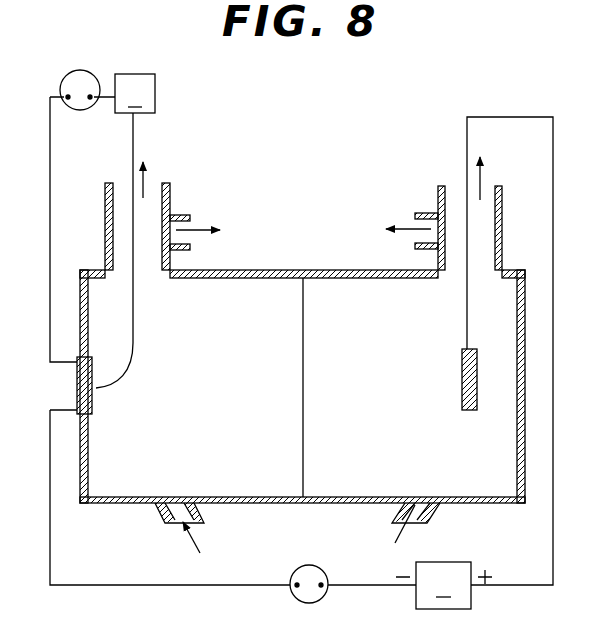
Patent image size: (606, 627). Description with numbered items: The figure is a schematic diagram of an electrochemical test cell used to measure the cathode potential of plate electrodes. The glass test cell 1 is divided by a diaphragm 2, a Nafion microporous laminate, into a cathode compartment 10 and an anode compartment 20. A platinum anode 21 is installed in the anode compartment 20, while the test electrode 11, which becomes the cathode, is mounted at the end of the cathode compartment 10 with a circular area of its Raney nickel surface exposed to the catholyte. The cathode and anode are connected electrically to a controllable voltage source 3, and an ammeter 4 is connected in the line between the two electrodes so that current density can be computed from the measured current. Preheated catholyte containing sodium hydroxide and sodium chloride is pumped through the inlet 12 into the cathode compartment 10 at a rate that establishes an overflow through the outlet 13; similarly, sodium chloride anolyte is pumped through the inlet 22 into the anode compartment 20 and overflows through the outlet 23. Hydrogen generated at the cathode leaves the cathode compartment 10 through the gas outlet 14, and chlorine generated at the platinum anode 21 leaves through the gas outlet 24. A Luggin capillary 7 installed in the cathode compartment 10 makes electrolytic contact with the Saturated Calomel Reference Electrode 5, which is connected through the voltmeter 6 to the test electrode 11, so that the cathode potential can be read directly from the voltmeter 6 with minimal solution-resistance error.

The test cell 1 is at (266, 503).
The diaphragm 2 is at (302, 408).
The controllable voltage source 3 is at (444, 585).
The ammeter 4 is at (322, 598).
The Saturated Calomel Reference Electrode 5 is at (135, 93).
The voltmeter 6 is at (80, 70).
The Luggin capillary 7 is at (137, 320).
The cathode compartment 10 is at (199, 403).
The test electrode 11 is at (76, 388).
The inlet 12 is at (179, 527).
The outlet 13 is at (190, 222).
The gas outlet 14 is at (167, 183).
The anode compartment 20 is at (413, 403).
The platinum anode 21 is at (462, 392).
The inlet 22 is at (418, 525).
The outlet 23 is at (415, 222).
The gas outlet 24 is at (442, 186).